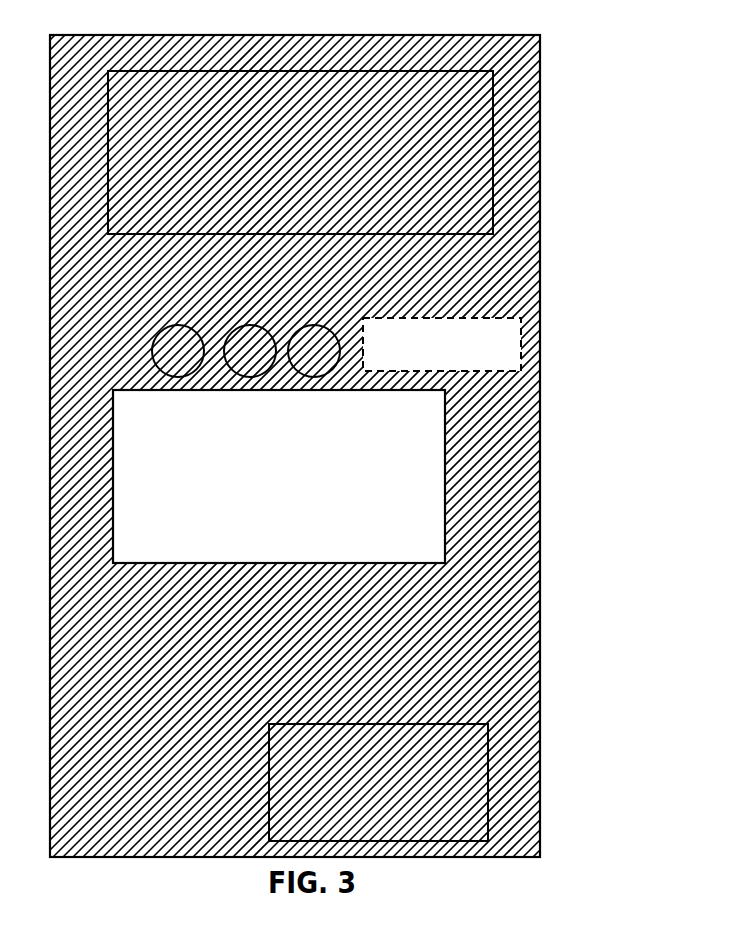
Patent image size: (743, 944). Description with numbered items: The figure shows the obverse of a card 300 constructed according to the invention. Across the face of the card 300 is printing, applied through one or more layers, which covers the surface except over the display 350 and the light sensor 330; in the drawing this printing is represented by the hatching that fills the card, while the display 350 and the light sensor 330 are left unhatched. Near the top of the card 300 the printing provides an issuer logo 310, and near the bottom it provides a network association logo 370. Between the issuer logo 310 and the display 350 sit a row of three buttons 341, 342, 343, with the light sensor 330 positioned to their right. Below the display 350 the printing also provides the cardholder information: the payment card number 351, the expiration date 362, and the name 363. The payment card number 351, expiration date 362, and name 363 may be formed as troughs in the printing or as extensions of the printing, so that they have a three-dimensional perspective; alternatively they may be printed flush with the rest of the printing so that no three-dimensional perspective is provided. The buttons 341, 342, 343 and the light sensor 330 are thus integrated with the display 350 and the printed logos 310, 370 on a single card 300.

The card 300 is at (387, 446).
The issuer logo 310 is at (100, 138).
The light sensor 330 is at (387, 335).
The button 341 is at (153, 340).
The button 342 is at (234, 318).
The button 343 is at (312, 318).
The display 350 is at (110, 438).
The payment card number 351 is at (112, 597).
The expiration date 362 is at (197, 627).
The name 363 is at (163, 671).
The network association logo 370 is at (268, 768).